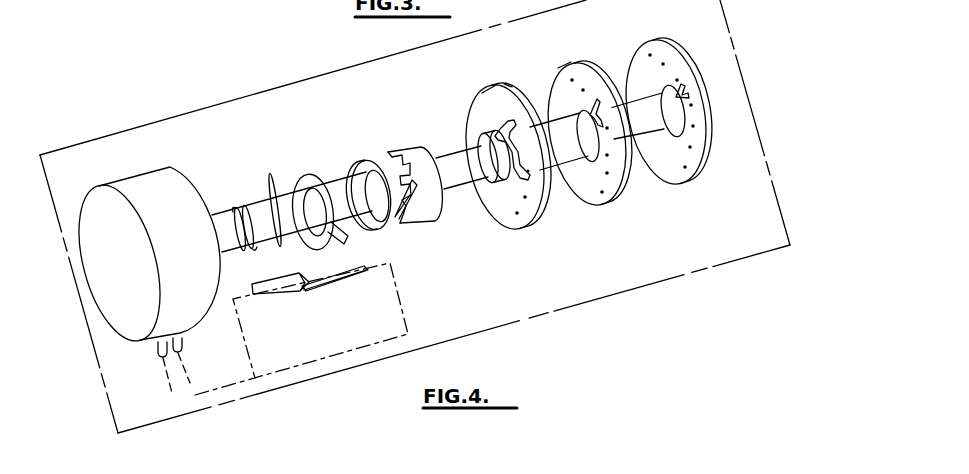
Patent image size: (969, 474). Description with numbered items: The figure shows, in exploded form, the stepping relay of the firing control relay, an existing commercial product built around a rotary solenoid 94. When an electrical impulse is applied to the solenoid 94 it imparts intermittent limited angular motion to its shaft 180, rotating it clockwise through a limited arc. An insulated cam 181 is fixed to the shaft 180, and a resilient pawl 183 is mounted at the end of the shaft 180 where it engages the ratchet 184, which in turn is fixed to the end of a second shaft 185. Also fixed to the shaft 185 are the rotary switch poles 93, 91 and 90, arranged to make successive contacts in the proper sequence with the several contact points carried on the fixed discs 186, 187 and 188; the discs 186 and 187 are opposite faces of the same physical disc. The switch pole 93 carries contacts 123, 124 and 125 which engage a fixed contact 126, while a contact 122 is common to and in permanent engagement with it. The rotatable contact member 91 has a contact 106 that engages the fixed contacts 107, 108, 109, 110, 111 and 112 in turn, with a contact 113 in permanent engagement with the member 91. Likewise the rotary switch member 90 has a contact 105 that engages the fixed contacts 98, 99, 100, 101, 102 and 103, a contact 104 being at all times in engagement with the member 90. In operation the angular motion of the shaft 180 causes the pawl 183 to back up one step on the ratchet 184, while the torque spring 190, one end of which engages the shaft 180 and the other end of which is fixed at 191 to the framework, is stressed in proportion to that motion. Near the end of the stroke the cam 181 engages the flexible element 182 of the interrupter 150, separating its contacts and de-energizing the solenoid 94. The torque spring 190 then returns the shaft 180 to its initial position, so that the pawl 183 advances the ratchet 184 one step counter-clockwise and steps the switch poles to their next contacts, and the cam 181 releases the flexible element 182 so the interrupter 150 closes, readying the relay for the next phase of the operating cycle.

The rotary solenoid 94 is at (115, 325).
The shaft 180 is at (340, 187).
The torque spring 190 is at (240, 210).
The fixed end of torque spring 191 is at (277, 176).
The insulated cam 181 is at (308, 175).
The ratchet 184 is at (403, 152).
The resilient pawl 183 is at (402, 223).
The shaft 185 is at (455, 180).
The rotary switch pole 93 is at (505, 161).
The fixed disc 186 is at (487, 88).
The fixed disc 187 is at (508, 83).
The contact 123 is at (493, 185).
The contact 124 is at (507, 127).
The contact 125 is at (528, 171).
The fixed contact 126 is at (525, 197).
The contact 122 is at (517, 213).
The rotatable contact member 91 is at (594, 158).
The contact 106 is at (585, 106).
The fixed contact 110 is at (608, 114).
The fixed contact 107 is at (572, 80).
The fixed contact 108 is at (583, 90).
The fixed disc 188 is at (563, 65).
The fixed contact 109 is at (607, 128).
The fixed contact 111 is at (607, 155).
The fixed contact 112 is at (607, 173).
The contact 113 is at (602, 192).
The rotary switch member 90 is at (677, 177).
The contact 105 is at (684, 96).
The fixed contact 98 is at (650, 55).
The fixed contact 99 is at (663, 64).
The fixed contact 100 is at (677, 80).
The fixed contact 101 is at (691, 105).
The fixed contact 102 is at (693, 126).
The fixed contact 103 is at (690, 147).
The contact 104 is at (685, 167).
The interrupter 150 is at (305, 286).
The flexible element 182 is at (347, 275).